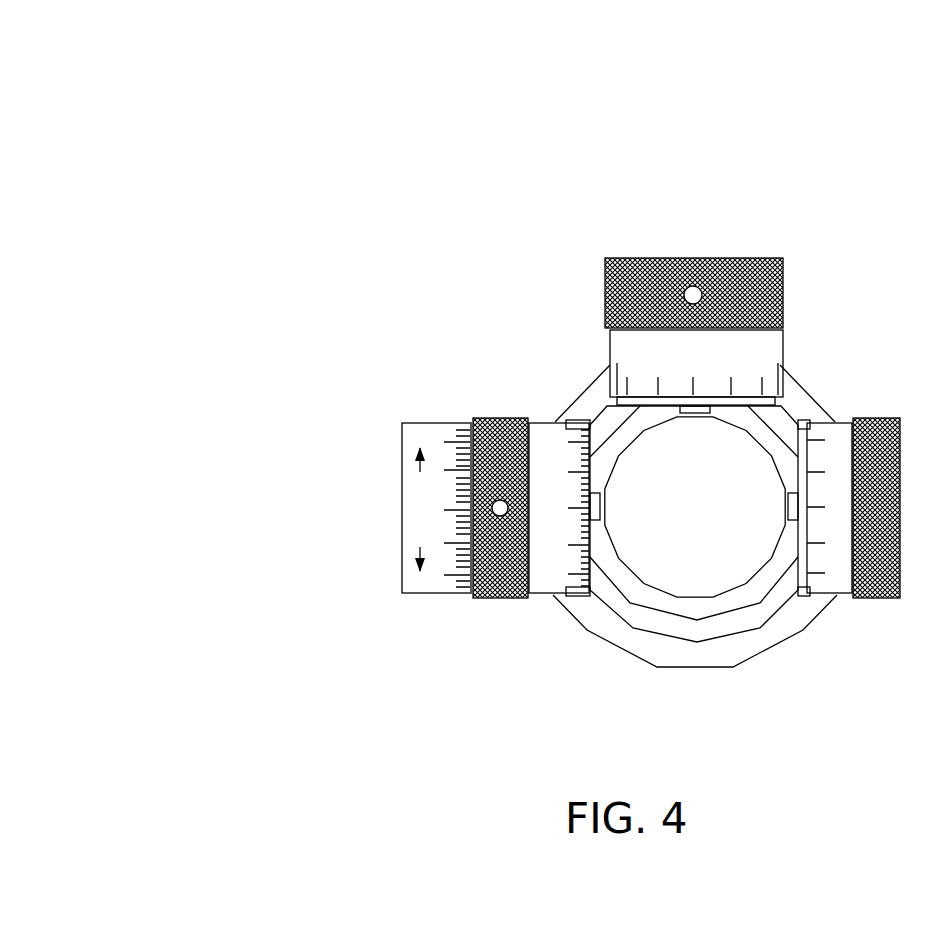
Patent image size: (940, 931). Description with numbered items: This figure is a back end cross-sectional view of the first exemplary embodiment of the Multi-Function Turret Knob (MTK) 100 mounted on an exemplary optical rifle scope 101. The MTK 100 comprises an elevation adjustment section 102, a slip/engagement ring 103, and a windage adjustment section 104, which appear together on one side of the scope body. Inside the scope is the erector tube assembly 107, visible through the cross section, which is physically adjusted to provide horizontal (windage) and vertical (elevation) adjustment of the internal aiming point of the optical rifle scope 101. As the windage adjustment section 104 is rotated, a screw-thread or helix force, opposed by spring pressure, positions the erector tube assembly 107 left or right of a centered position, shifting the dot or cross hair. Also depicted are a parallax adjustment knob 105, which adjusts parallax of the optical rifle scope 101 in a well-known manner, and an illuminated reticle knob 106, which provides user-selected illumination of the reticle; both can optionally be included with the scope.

The Multi-Function Turret Knob (MTK) 100 is at (350, 543).
The optical rifle scope 101 is at (588, 605).
The elevation adjustment section 102 is at (542, 415).
The slip/engagement ring 103 is at (395, 406).
The windage adjustment section 104 is at (432, 422).
The parallax adjustment knob 105 is at (636, 252).
The illuminated reticle knob 106 is at (827, 311).
The erector tube assembly 107 is at (668, 590).